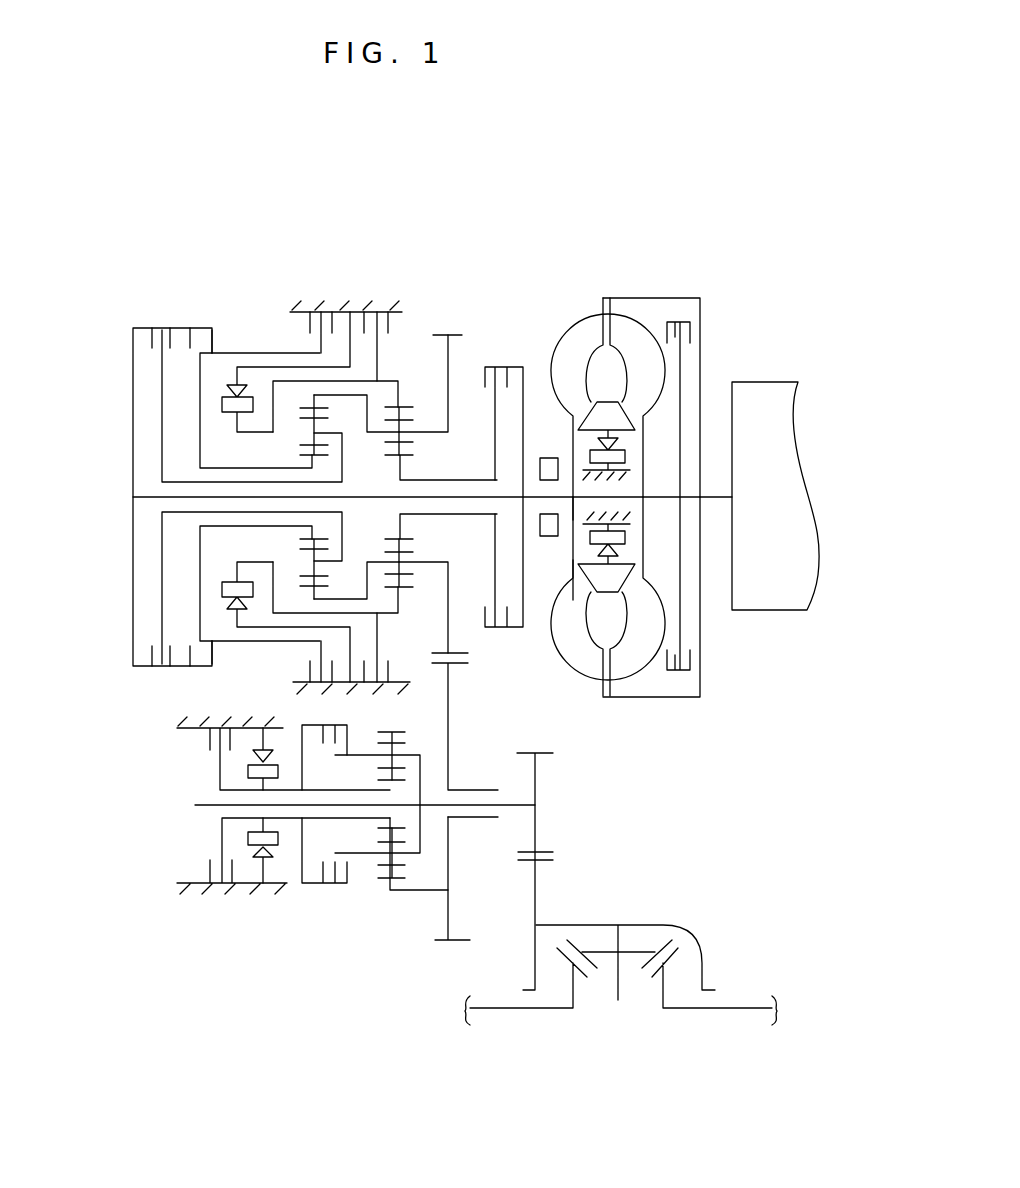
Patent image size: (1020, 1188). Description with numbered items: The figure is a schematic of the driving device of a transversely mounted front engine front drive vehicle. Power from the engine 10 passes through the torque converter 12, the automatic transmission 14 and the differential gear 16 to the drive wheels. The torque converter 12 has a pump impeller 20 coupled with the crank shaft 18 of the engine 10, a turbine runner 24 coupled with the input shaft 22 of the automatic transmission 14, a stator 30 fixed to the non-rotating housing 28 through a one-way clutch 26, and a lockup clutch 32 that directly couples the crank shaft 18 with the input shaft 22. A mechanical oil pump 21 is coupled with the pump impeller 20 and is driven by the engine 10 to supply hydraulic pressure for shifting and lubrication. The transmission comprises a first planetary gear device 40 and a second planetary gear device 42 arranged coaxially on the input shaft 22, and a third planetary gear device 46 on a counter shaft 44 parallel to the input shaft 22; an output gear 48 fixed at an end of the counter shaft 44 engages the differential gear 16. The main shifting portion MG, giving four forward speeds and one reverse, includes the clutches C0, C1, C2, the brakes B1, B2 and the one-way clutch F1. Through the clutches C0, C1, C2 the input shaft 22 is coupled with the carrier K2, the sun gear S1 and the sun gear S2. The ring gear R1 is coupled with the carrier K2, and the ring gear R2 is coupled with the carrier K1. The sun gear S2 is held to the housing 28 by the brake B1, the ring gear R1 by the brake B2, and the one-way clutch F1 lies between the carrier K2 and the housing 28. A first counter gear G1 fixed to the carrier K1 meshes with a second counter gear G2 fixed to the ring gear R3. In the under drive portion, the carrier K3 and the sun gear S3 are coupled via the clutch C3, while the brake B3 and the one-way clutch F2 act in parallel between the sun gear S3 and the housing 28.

The engine 10 is at (748, 427).
The torque converter 12 is at (607, 261).
The automatic transmission 14 is at (458, 240).
The differential gear 16 is at (617, 889).
The crank shaft 18 is at (722, 500).
The pump impeller 20 is at (593, 327).
The mechanical oil pump 21 is at (548, 458).
The input shaft 22 is at (456, 503).
The turbine runner 24 is at (637, 655).
The one-way clutch 26 is at (568, 660).
The housing 28 is at (352, 307).
The stator 30 is at (607, 423).
The lockup clutch 32 is at (680, 320).
The first planetary gear device 40 is at (414, 339).
The second planetary gear device 42 is at (298, 387).
The counter shaft 44 is at (205, 803).
The third planetary gear device 46 is at (386, 896).
The output gear 48 is at (545, 850).
The main shifting portion MG is at (127, 631).
The clutch C0 is at (158, 336).
The clutch C1 is at (500, 367).
The clutch C2 is at (198, 330).
The clutch C3 is at (342, 887).
The brake B1 is at (308, 319).
The brake B2 is at (392, 322).
The brake B3 is at (212, 870).
The one-way clutch F1 is at (222, 404).
The one-way clutch F2 is at (275, 850).
The carrier K1 is at (418, 432).
The carrier K2 is at (295, 433).
The carrier K3 is at (405, 753).
The ring gear R1 is at (405, 407).
The ring gear R2 is at (328, 405).
The ring gear R3 is at (390, 722).
The sun gear S1 is at (400, 457).
The sun gear S2 is at (298, 460).
The sun gear S3 is at (380, 780).
The first counter gear G1 is at (460, 653).
The second counter gear G2 is at (465, 935).